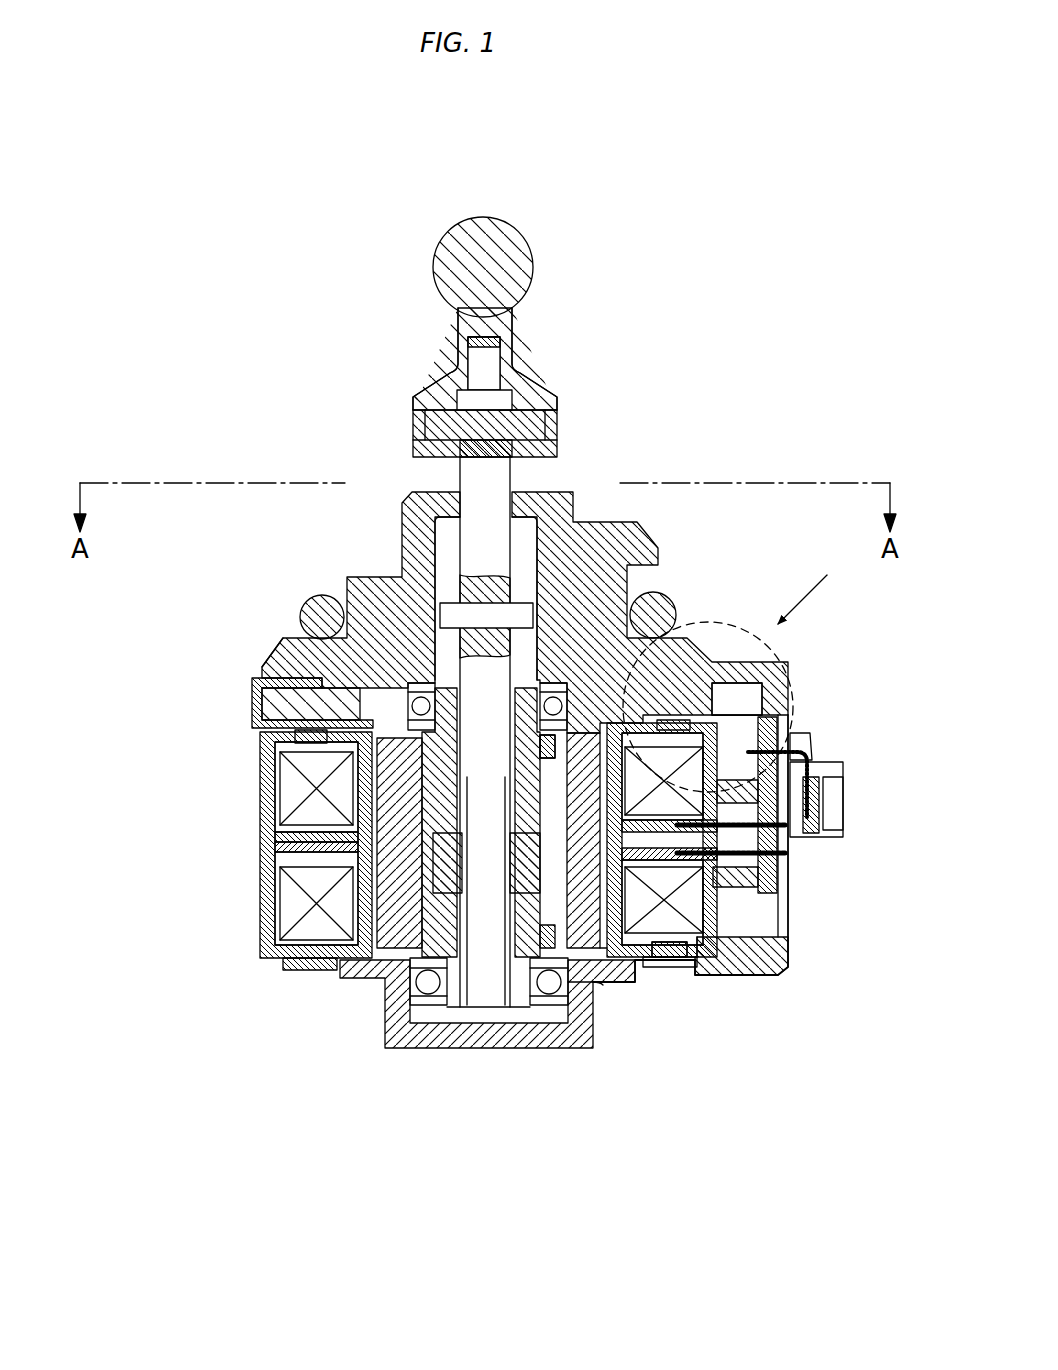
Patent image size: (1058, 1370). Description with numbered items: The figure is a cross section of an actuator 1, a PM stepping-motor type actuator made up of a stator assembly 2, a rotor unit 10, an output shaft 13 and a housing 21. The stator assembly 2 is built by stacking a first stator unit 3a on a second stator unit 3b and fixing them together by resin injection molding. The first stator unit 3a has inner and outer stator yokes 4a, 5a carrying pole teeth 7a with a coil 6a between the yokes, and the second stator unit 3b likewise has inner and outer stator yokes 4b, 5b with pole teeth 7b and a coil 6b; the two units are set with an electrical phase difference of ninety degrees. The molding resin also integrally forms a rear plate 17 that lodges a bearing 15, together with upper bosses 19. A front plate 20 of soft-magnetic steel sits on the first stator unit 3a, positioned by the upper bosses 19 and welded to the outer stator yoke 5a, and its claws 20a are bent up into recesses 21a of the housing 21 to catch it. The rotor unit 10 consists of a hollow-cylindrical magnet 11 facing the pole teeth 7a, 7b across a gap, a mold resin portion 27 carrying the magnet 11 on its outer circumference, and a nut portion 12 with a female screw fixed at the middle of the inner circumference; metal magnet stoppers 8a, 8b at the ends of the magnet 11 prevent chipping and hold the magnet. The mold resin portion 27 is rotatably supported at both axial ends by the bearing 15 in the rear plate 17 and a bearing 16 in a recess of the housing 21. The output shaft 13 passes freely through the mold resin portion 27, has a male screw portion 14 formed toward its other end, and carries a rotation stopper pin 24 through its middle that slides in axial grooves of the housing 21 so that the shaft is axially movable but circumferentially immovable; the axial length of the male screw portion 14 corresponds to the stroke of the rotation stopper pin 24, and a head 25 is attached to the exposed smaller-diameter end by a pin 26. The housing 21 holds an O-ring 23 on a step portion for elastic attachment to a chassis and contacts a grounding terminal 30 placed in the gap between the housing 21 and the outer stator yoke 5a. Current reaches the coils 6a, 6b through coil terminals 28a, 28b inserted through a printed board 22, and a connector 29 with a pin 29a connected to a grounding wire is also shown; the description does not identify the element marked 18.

The actuator 1 is at (768, 205).
The stator assembly 2 is at (108, 790).
The first stator unit 3a is at (168, 767).
The second stator unit 3b is at (168, 863).
The inner stator yoke 4a is at (262, 843).
The inner stator yoke 4b is at (262, 855).
The outer stator yoke 5a is at (262, 778).
The outer stator yoke 5b is at (262, 940).
The coil 6a is at (262, 795).
The coil 6b is at (262, 912).
The pole teeth 7a is at (700, 963).
The pole teeth 7b is at (672, 950).
The magnet stopper 8a is at (412, 703).
The magnet stopper 8b is at (412, 985).
The rotor unit 10 is at (548, 1198).
The magnet 11 is at (618, 950).
The nut portion 12 is at (767, 683).
The output shaft 13 is at (497, 477).
The male screw portion 14 is at (628, 985).
The bearing 15 is at (583, 1003).
The bearing 16 is at (573, 712).
The rear plate 17 is at (418, 1040).
The side wall 18 is at (757, 967).
The upper bosses 19 is at (262, 736).
The front plate 20 is at (258, 706).
The claws 20a is at (292, 697).
The housing 21 is at (357, 582).
The recesses 21a is at (280, 633).
The printed board 22 is at (820, 802).
The O-ring 23 is at (652, 598).
The rotation stopper pin 24 is at (455, 605).
The head 25 is at (500, 275).
The pin 26 is at (416, 420).
The mold resin portion 27 is at (395, 950).
The coil terminal 28a is at (790, 845).
The coil terminal 28b is at (768, 878).
The connector 29 is at (843, 765).
The pin 29a is at (793, 743).
The grounding terminal 30 is at (763, 698).